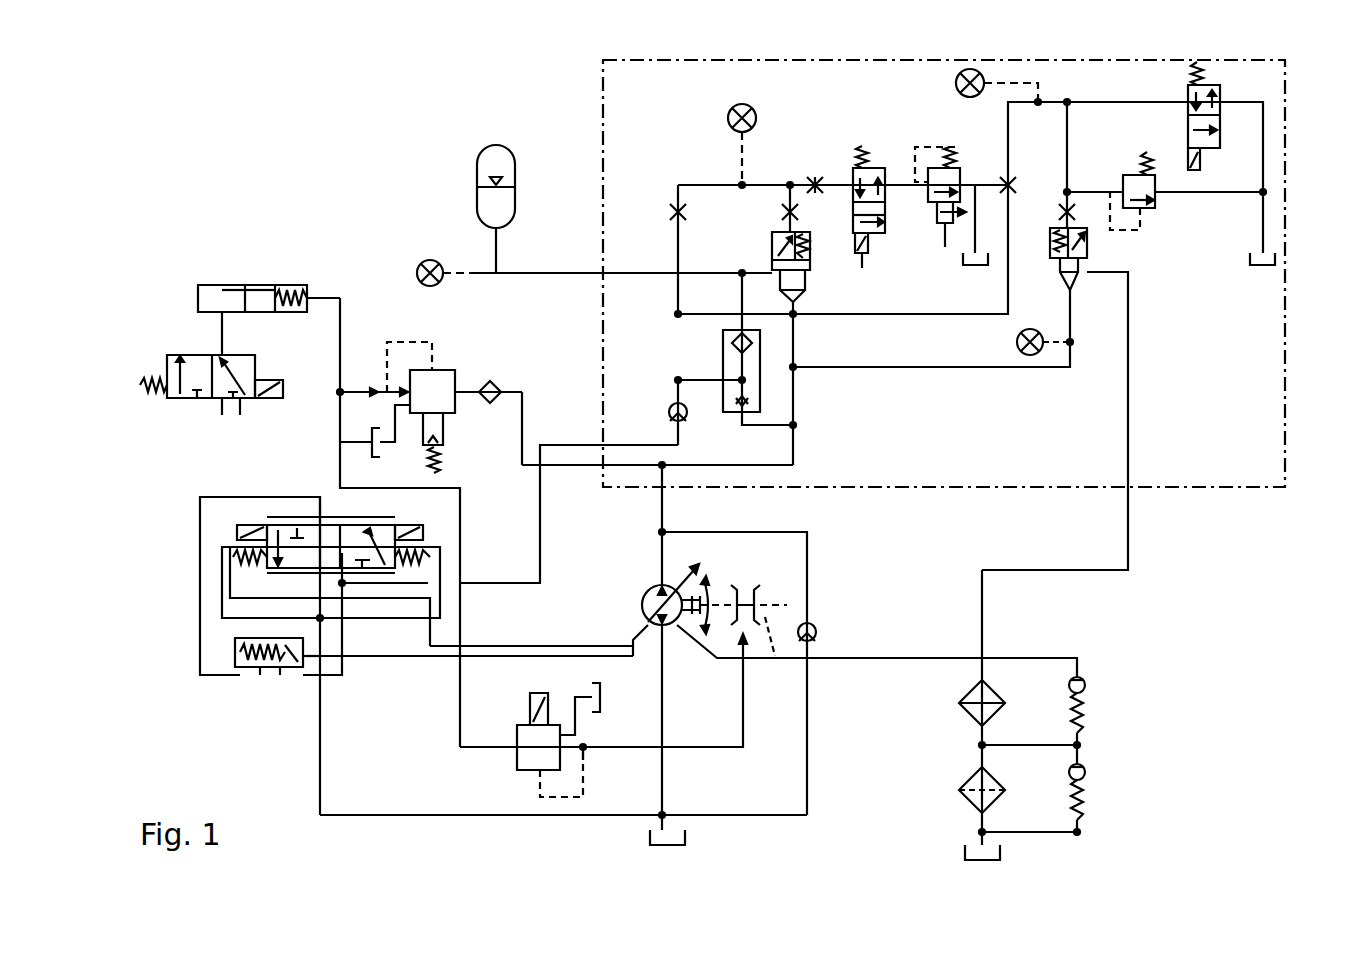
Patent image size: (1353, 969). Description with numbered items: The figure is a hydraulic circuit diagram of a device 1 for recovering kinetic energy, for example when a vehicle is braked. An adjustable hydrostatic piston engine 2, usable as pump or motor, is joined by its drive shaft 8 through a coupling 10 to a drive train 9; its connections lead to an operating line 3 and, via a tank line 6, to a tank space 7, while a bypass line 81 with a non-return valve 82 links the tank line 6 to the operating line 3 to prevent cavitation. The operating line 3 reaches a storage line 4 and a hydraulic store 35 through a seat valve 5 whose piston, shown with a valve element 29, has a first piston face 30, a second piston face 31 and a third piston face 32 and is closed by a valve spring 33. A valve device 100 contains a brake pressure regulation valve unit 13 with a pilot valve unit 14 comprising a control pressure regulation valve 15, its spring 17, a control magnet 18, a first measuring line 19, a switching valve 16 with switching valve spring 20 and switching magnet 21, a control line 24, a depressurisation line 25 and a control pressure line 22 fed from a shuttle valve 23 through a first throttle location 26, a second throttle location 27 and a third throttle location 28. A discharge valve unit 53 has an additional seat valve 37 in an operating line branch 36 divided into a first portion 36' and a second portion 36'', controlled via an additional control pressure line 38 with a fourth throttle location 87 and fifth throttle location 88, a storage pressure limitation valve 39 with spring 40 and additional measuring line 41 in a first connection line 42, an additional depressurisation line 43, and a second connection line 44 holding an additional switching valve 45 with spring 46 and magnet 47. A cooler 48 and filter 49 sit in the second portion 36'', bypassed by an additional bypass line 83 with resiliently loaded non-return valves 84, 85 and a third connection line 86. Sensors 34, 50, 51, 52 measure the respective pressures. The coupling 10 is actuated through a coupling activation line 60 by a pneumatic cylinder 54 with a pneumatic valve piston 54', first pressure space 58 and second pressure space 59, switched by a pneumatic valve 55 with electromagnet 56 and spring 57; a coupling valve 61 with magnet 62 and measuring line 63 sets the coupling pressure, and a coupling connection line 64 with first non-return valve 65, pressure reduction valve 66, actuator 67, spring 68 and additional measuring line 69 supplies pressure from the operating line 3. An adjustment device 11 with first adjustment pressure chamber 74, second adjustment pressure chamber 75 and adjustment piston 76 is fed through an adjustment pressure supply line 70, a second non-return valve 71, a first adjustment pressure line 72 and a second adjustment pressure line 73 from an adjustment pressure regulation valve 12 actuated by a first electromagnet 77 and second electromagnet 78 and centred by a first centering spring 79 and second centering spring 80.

The device 1 is at (352, 140).
The adjustable hydrostatic piston engine 2 is at (645, 606).
The operating line 3 is at (666, 510).
The storage line 4 is at (543, 270).
The seat valve 5 is at (728, 208).
The tank line 6 is at (668, 778).
The tank space 7 is at (368, 432).
The drive shaft 8 is at (708, 578).
The drive train 9 is at (619, 688).
The coupling 10 is at (748, 578).
The adjustment device 11 is at (232, 695).
The adjustment pressure regulation valve 12 is at (218, 528).
The brake pressure regulation valve unit 13 is at (655, 138).
The pilot valve unit 14 is at (938, 122).
The control pressure regulation valve 15 is at (935, 205).
The switching valve 16 is at (877, 228).
The control pressure regulation valve spring 17 is at (950, 147).
The control magnet 18 is at (944, 250).
The first measuring line 19 is at (918, 147).
The switching valve spring 20 is at (860, 152).
The switching magnet 21 is at (862, 262).
The control pressure line 22 is at (786, 195).
The shuttle valve 23 is at (723, 353).
The control line 24 is at (830, 182).
The depressurisation line 25 is at (965, 185).
The first throttle location 26 is at (670, 214).
The second throttle location 27 is at (785, 216).
The third throttle location 28 is at (818, 200).
The valve seat 29 is at (806, 280).
The first piston face 30 is at (794, 302).
The second piston face 31 is at (784, 288).
The third piston face 32 is at (772, 250).
The valve spring 33 is at (810, 248).
The control line sensor 34 is at (757, 118).
The hydraulic store 35 is at (485, 162).
The operating line branch 36 is at (1192, 545).
The first portion 36' is at (935, 397).
The second portion 36'' is at (1055, 421).
The additional seat valve 37 is at (1088, 248).
The additional control pressure line 38 is at (1010, 152).
The storage pressure limitation valve 39 is at (1123, 182).
The storage pressure limitation valve spring 40 is at (1140, 160).
The additional measuring line 41 is at (1142, 228).
The first connection line 42 is at (1208, 194).
The additional depressurisation line 43 is at (1265, 222).
The second connection line 44 is at (1265, 126).
The additional switching valve 45 is at (1222, 90).
The additional switching valve spring 46 is at (1192, 70).
The additional switching magnet 47 is at (1202, 153).
The cooler 48 is at (962, 712).
The filter 49 is at (962, 800).
The additional control line sensor 50 is at (985, 82).
The storage pressure sensor 51 is at (417, 272).
The operating line branch sensor 52 is at (1030, 356).
The discharge valve unit 53 is at (1282, 80).
The pneumatic cylinder 54 is at (238, 239).
The pneumatic valve piston 54' is at (261, 259).
The pneumatic valve 55 is at (174, 330).
The electromagnet 56 is at (275, 383).
The pneumatic valve spring 57 is at (152, 380).
The first pressure space 58 is at (212, 285).
The second pressure space 59 is at (290, 285).
The coupling activation line 60 is at (342, 310).
The coupling valve 61 is at (520, 760).
The coupling valve magnet 62 is at (535, 713).
The measuring line 63 is at (586, 783).
The coupling connection line 64 is at (524, 412).
The first non-return valve 65 is at (490, 380).
The pressure reduction valve 66 is at (440, 372).
The actuator 67 is at (440, 430).
The spring 68 is at (440, 462).
The additional measuring line 69 is at (405, 340).
The adjustment pressure supply line 70 is at (584, 445).
The second non-return valve 71 is at (669, 412).
The first adjustment pressure line 72 is at (312, 680).
The second adjustment pressure line 73 is at (200, 612).
The first adjustment pressure chamber 74 is at (281, 672).
The second adjustment pressure chamber 75 is at (235, 652).
The adjustment piston 76 is at (260, 672).
The first electromagnet 77 is at (242, 523).
The second electromagnet 78 is at (425, 533).
The first centering spring 79 is at (233, 557).
The second centering spring 80 is at (432, 553).
The bypass line 81 is at (809, 558).
The non-return valve 82 is at (816, 630).
The additional bypass line 83 is at (1080, 826).
The first resiliently loaded non-return valve 84 is at (1082, 775).
The second resiliently loaded non-return valve 85 is at (1082, 688).
The third connection line 86 is at (1035, 742).
The fourth throttle location 87 is at (1016, 185).
The fifth throttle location 88 is at (1060, 212).
The valve device 100 is at (603, 105).